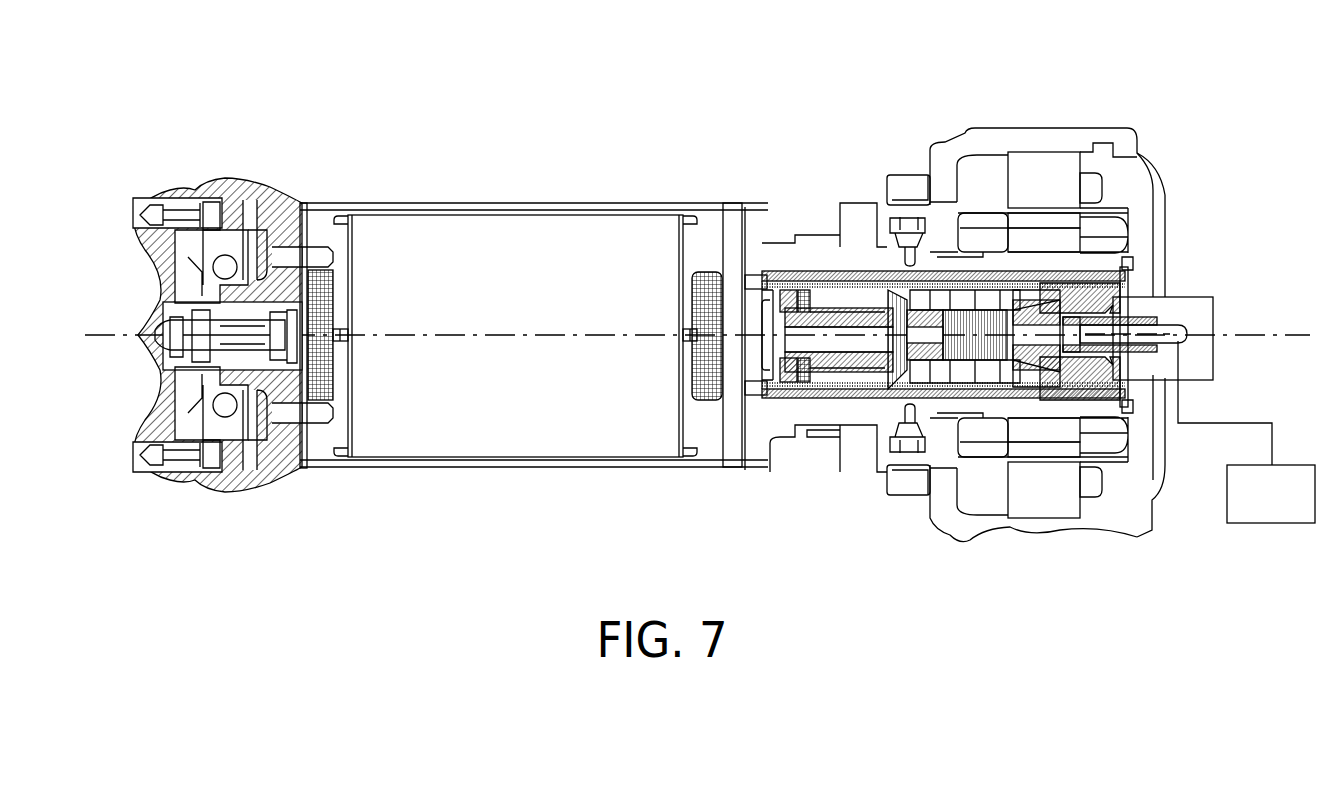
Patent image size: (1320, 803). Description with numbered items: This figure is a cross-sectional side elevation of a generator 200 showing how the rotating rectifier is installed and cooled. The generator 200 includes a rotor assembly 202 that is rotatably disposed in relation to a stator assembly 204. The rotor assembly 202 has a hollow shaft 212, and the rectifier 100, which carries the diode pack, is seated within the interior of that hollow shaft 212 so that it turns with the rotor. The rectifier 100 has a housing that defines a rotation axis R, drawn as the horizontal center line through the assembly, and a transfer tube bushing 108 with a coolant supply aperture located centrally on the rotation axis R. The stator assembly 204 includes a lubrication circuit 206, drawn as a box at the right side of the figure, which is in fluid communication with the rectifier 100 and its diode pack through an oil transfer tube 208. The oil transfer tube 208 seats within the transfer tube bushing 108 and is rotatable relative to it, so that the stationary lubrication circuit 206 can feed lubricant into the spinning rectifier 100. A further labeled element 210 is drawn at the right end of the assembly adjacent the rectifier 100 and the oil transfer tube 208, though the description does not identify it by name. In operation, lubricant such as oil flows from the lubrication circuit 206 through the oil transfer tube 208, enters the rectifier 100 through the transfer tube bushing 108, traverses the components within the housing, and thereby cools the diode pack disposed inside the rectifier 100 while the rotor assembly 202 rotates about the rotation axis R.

The generator 200 is at (474, 495).
The rotor assembly 202 is at (588, 200).
The hollow shaft 212 is at (763, 240).
The rectifier 100 is at (928, 332).
The stator assembly 204 is at (1043, 172).
The ring gear housing 210 is at (1083, 290).
The oil transfer tube 208 is at (1133, 332).
The transfer tube bushing 108 is at (1100, 347).
The lubrication circuit 206 is at (1249, 511).
The rotation axis R is at (1252, 332).